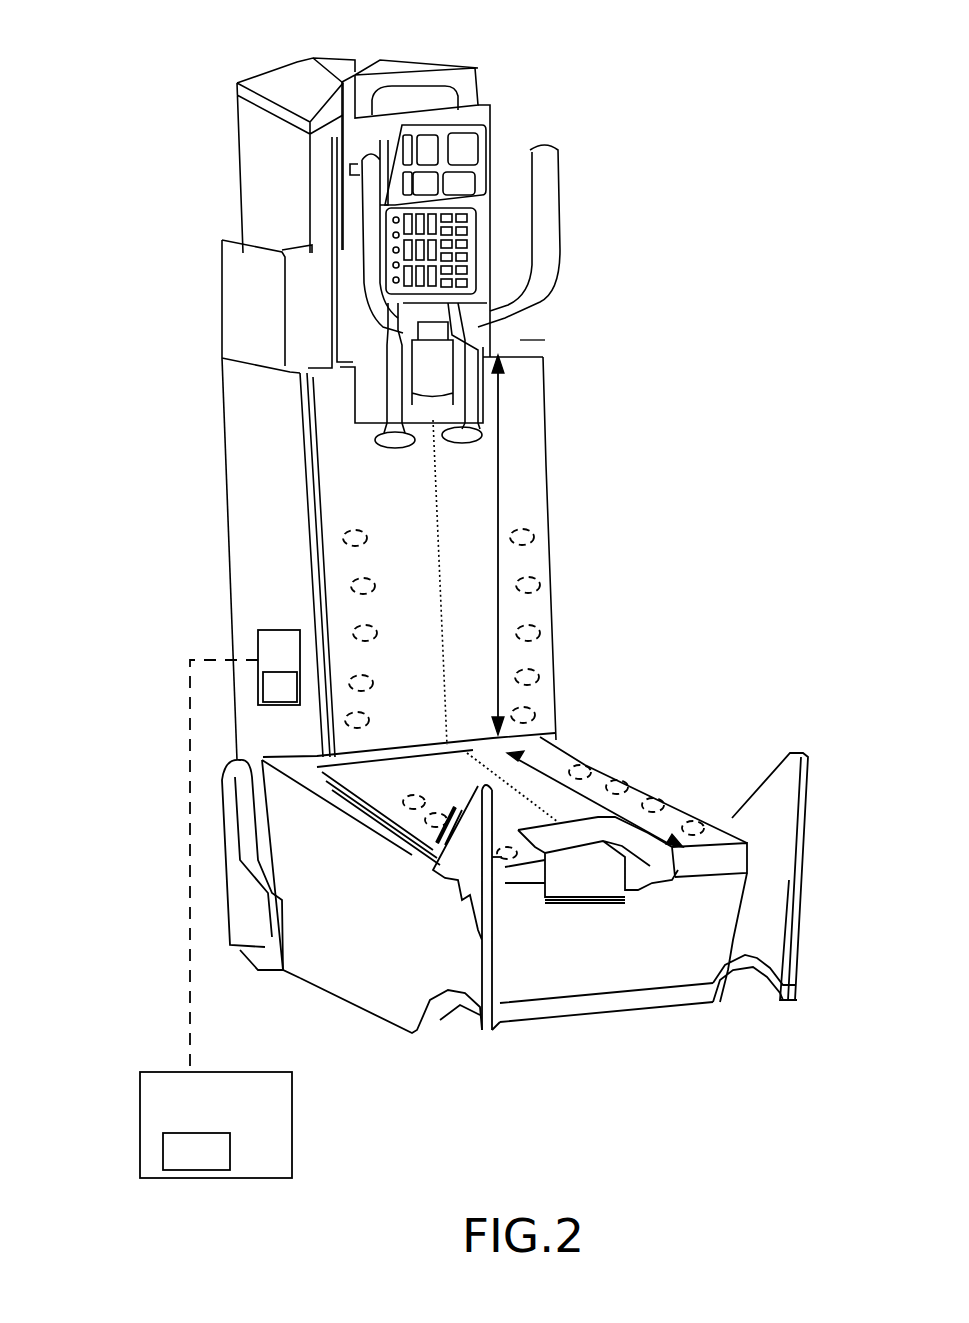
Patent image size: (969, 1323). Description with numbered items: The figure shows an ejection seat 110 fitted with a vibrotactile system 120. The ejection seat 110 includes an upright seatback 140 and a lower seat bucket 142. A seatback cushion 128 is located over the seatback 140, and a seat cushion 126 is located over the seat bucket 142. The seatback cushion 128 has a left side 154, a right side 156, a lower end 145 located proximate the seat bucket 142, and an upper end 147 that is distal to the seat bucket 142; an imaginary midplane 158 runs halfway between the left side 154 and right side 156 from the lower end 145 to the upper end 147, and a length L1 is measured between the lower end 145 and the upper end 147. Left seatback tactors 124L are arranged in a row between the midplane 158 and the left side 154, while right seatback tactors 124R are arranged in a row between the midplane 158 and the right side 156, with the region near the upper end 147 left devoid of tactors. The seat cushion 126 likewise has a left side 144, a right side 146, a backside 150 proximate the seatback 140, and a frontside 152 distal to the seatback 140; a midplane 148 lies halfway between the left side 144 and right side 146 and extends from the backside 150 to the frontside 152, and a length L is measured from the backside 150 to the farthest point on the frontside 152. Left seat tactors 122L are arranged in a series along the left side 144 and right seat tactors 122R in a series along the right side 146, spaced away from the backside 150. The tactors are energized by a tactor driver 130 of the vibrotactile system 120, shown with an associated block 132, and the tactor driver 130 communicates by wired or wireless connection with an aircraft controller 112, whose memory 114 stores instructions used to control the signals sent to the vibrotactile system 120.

The ejection seat 110 is at (215, 268).
The vibrotactile system 120 is at (175, 601).
The seatback 140 is at (242, 495).
The right side of seatback cushion 156 is at (300, 440).
The left side of seatback cushion 154 is at (546, 466).
The upper end of seatback cushion 147 is at (528, 340).
The midplane of seatback cushion 158 is at (438, 485).
The seatback cushion 128 is at (486, 561).
The length of seatback cushion L1 is at (500, 545).
The right seatback tactors 124R is at (368, 720).
The left seatback tactors 124L is at (540, 675).
The lower end of seatback cushion 145 is at (570, 733).
The seat cushion 126 is at (492, 767).
The backside of seat cushion 150 is at (448, 762).
The midplane of seat cushion 148 is at (472, 760).
The right side of seat cushion 146 is at (372, 790).
The seat bucket 142 is at (397, 950).
The left side of seat cushion 144 is at (682, 800).
The frontside of seat cushion 152 is at (713, 860).
The length of seat cushion L is at (595, 799).
The left seat tactors 122L is at (700, 822).
The right seat tactors 122R is at (410, 805).
The tactor driver 130 is at (296, 661).
The sensor 132 is at (296, 701).
The aircraft controller 112 is at (231, 1114).
The memory 114 is at (216, 1167).